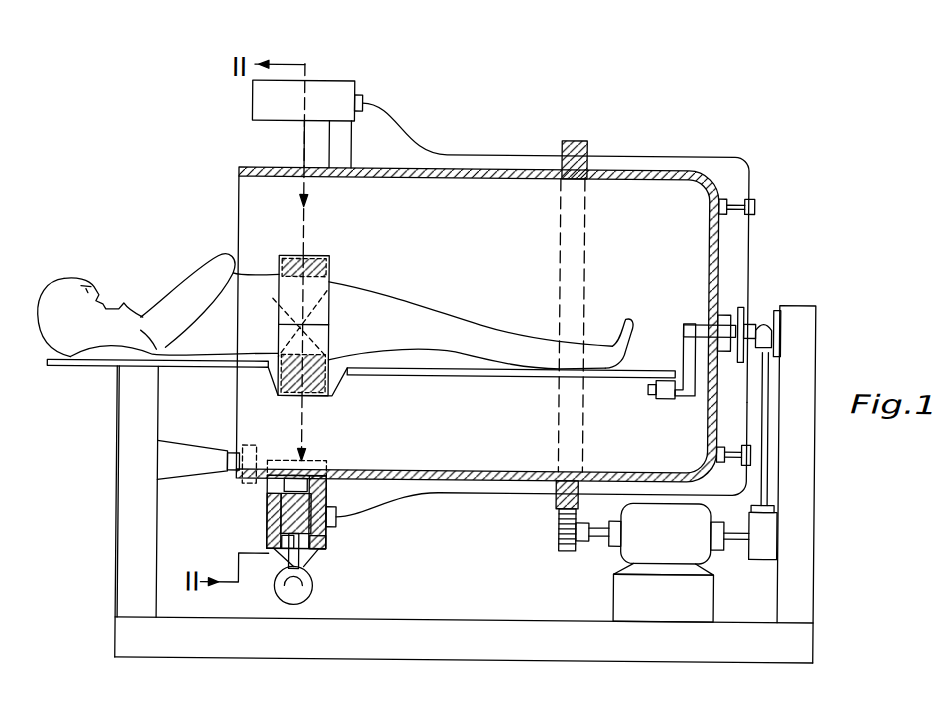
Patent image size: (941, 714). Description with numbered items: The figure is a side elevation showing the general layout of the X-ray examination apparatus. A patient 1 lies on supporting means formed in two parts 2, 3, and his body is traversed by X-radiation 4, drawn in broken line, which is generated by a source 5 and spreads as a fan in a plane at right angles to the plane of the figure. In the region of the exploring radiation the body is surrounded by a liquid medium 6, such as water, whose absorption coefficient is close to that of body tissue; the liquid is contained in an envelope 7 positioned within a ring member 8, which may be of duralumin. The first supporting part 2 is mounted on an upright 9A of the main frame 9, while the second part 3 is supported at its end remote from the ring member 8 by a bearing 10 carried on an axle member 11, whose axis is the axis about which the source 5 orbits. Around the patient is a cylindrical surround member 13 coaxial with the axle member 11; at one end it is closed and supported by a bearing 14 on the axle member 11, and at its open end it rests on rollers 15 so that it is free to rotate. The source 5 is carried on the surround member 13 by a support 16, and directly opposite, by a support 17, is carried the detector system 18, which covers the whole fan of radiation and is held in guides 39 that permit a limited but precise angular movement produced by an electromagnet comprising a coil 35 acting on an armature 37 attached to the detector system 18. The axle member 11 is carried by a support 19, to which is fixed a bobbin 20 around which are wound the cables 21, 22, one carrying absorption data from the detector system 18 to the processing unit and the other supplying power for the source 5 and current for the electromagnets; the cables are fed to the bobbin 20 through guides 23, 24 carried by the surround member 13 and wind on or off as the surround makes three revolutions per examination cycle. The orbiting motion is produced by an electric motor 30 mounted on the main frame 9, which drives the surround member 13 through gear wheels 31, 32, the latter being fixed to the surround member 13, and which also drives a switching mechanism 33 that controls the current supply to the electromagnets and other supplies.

The patient 1 is at (162, 296).
The supporting means part 2 is at (95, 370).
The supporting means part 3 is at (475, 377).
The X-radiation 4 is at (300, 141).
The X-ray source 5 is at (250, 98).
The liquid medium 6 is at (312, 325).
The envelope 7 is at (282, 283).
The ring member 8 is at (336, 341).
The main frame 9 is at (125, 639).
The upright 9A is at (125, 526).
The bearing 10 is at (667, 400).
The axle member 11 is at (702, 320).
The surround member 13 is at (452, 180).
The bearing 14 is at (722, 315).
The rollers 15 is at (247, 486).
The support 16 is at (350, 142).
The support 17 is at (330, 492).
The detector system 18 is at (287, 520).
The support 19 is at (800, 493).
The bobbin 20 is at (753, 317).
The cable 21 is at (748, 402).
The cable 22 is at (748, 240).
The guide 23 is at (742, 445).
The guide 24 is at (754, 204).
The electric motor 30 is at (637, 547).
The gear wheel 31 is at (558, 538).
The gear wheel 32 is at (555, 502).
The switching mechanism 33 is at (765, 537).
The coil 35 is at (282, 595).
The armature 37 is at (313, 565).
The guides 39 is at (280, 537).